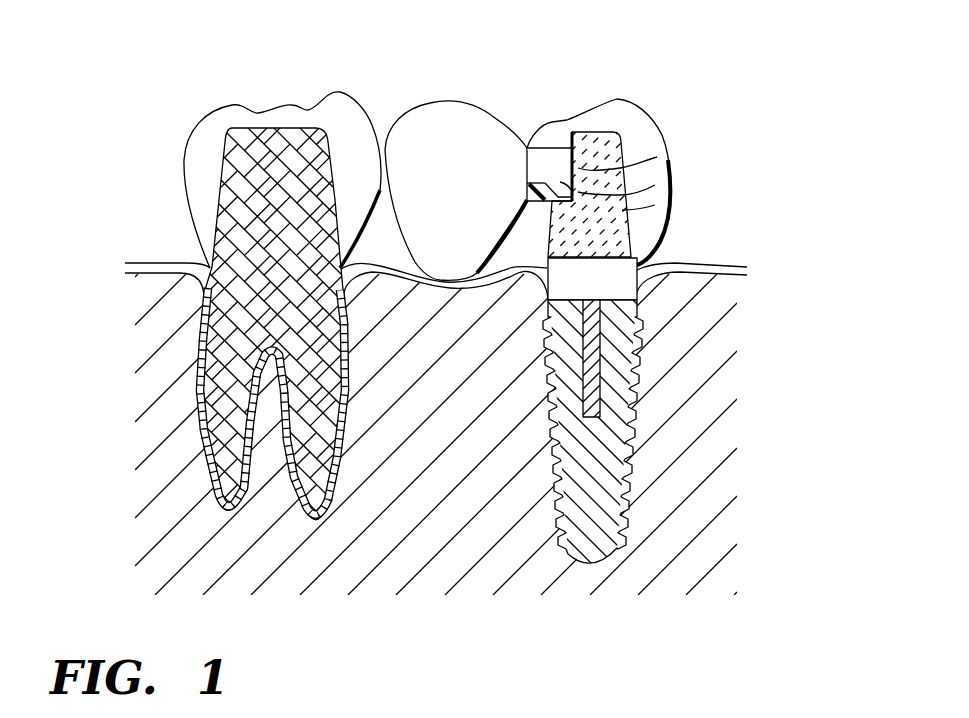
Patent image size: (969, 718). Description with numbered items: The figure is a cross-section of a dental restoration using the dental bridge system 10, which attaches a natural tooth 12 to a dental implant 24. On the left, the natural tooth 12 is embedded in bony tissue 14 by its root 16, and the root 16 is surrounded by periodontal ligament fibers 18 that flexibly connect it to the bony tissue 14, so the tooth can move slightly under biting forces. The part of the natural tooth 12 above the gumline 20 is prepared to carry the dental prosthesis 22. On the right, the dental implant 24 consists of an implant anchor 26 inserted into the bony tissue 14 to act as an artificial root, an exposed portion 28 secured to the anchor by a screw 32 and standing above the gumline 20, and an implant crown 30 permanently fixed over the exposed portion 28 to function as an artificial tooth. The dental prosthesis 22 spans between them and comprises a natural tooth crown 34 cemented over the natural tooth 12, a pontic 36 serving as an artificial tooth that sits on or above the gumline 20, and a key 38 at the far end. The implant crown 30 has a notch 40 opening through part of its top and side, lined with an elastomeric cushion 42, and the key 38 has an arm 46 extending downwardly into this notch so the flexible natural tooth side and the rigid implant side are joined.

The dental bridge system 10 is at (617, 57).
The natural tooth 12 is at (230, 217).
The bony tissue 14 is at (150, 397).
The root 16 is at (203, 330).
The periodontal ligament fibers 18 is at (210, 460).
The gumline 20 is at (127, 267).
The dental prosthesis 22 is at (378, 80).
The dental implant 24 is at (655, 95).
The implant anchor 26 is at (597, 488).
The exposed portion 28 is at (633, 237).
The implant crown 30 is at (650, 133).
The screw 32 is at (597, 362).
The natural tooth crown 34 is at (197, 163).
The pontic 36 is at (480, 123).
The key 38 is at (537, 163).
The notch 40 is at (657, 157).
The elastomeric cushion 42 is at (655, 185).
The arm 46 is at (655, 205).